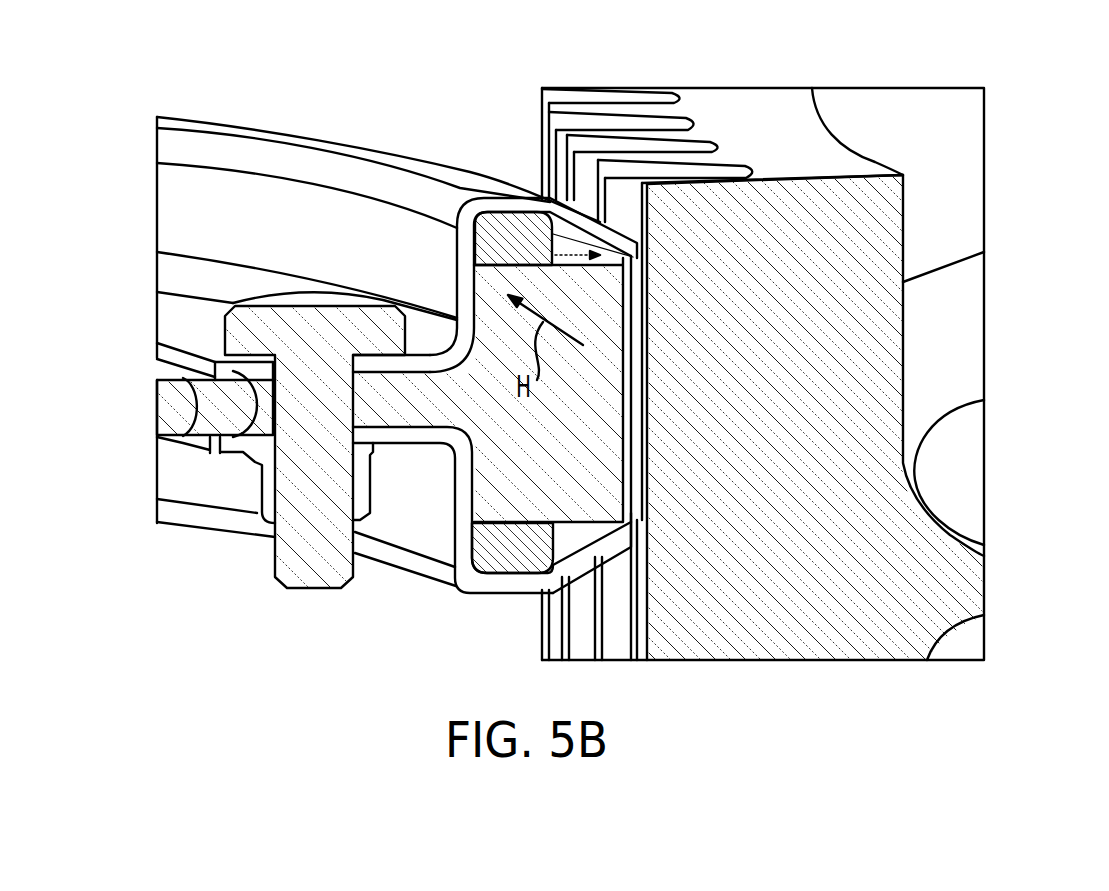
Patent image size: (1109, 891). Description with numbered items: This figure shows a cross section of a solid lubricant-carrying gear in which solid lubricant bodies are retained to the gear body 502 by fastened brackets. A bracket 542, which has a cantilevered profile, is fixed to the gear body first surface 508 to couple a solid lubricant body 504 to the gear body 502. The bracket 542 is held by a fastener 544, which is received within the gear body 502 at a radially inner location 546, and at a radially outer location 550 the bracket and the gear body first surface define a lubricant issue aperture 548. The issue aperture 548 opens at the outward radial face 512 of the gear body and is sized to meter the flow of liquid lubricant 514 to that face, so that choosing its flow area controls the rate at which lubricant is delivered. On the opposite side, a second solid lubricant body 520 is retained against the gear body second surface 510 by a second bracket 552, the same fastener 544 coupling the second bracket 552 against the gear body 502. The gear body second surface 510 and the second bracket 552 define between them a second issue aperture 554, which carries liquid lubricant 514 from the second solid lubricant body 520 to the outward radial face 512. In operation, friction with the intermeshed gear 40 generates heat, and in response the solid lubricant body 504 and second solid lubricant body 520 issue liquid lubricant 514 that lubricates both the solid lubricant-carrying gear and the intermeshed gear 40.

The intermeshed gear 40 is at (782, 635).
The gear body 502 is at (172, 404).
The solid lubricant body 504 is at (516, 238).
The gear body first surface 508 is at (233, 371).
The gear body second surface 510 is at (190, 353).
The outward radial face 512 is at (642, 400).
The liquid lubricant 514 is at (580, 256).
The second solid lubricant body 520 is at (501, 555).
The bracket 542 is at (208, 145).
The fastener 544 is at (313, 556).
The radially inner location 546 is at (195, 273).
The lubricant issue aperture 548 is at (632, 258).
The radially outer location 550 is at (605, 195).
The second bracket 552 is at (465, 511).
The second issue aperture 554 is at (640, 512).